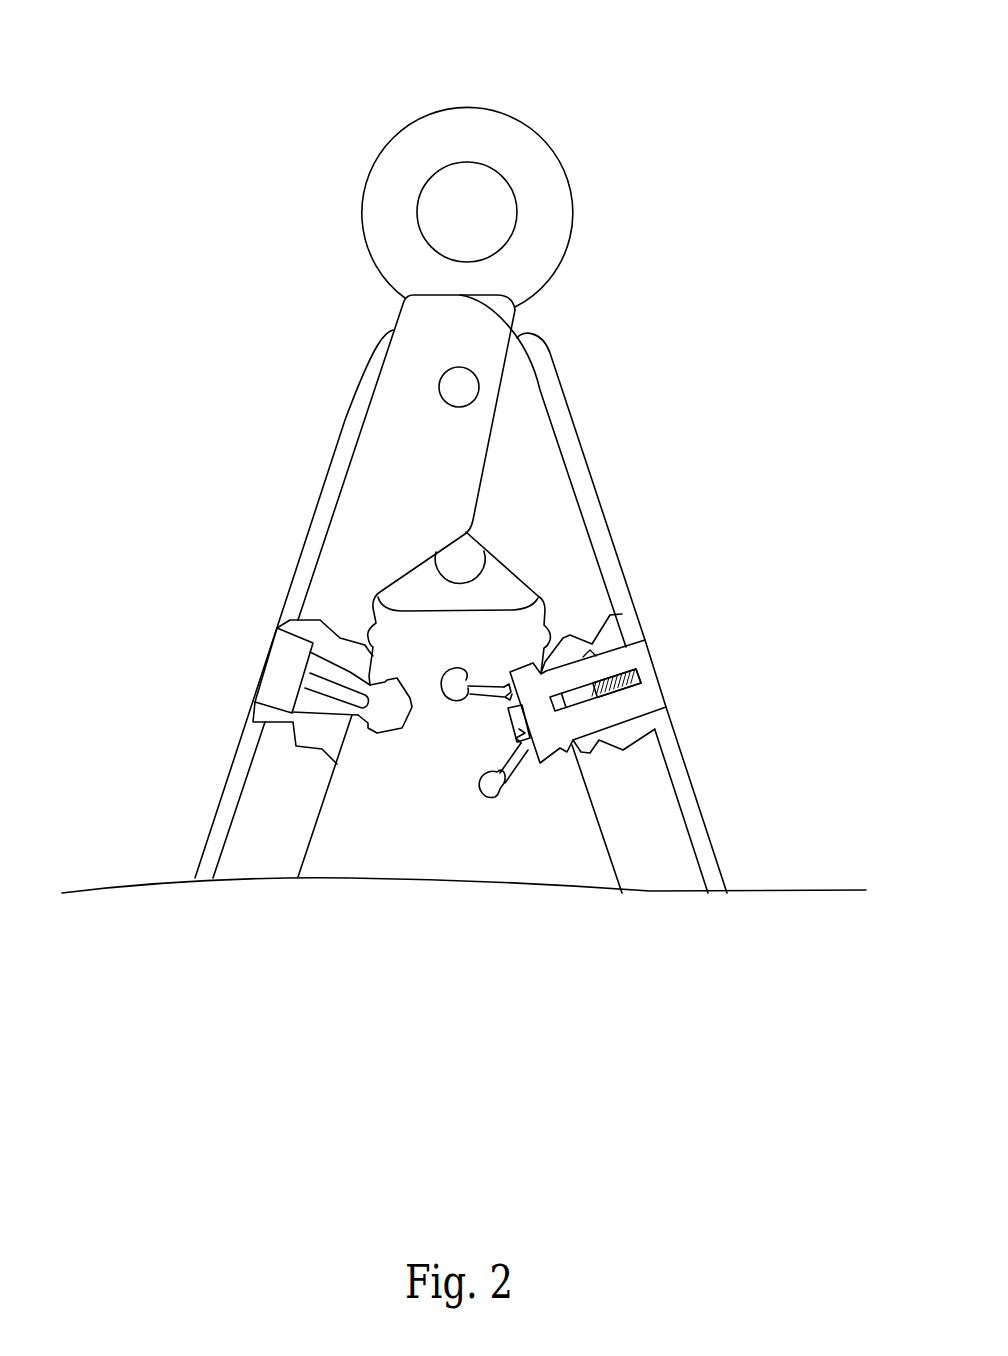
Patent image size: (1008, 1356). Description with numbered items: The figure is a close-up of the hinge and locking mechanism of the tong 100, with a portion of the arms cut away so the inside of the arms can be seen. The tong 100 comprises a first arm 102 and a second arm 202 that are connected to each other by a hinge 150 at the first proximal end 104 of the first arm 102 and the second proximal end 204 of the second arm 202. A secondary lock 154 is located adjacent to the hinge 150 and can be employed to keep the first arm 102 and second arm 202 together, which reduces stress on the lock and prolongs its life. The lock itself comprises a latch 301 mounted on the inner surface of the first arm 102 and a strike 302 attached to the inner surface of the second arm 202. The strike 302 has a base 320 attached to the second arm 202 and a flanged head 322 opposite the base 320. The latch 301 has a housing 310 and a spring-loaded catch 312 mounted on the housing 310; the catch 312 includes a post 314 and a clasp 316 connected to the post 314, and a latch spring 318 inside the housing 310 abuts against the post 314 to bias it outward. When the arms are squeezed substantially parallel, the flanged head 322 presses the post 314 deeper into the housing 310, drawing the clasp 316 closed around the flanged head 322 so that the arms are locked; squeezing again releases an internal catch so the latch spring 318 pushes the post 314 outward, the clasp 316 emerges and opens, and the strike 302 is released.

The tong 100 is at (737, 110).
The secondary lock 154 is at (536, 128).
The second proximal end 204 is at (288, 343).
The hinge 150 is at (470, 385).
The first proximal end 104 is at (648, 415).
The first arm 102 is at (675, 832).
The second arm 202 is at (242, 835).
The strike 302 is at (262, 641).
The base 320 is at (270, 678).
The flanged head 322 is at (389, 729).
The latch 301 is at (660, 641).
The housing 310 is at (653, 695).
The post 314 is at (575, 706).
The latch spring 318 is at (640, 672).
The clasp 316 is at (477, 787).
The spring-loaded catch 312 is at (484, 822).